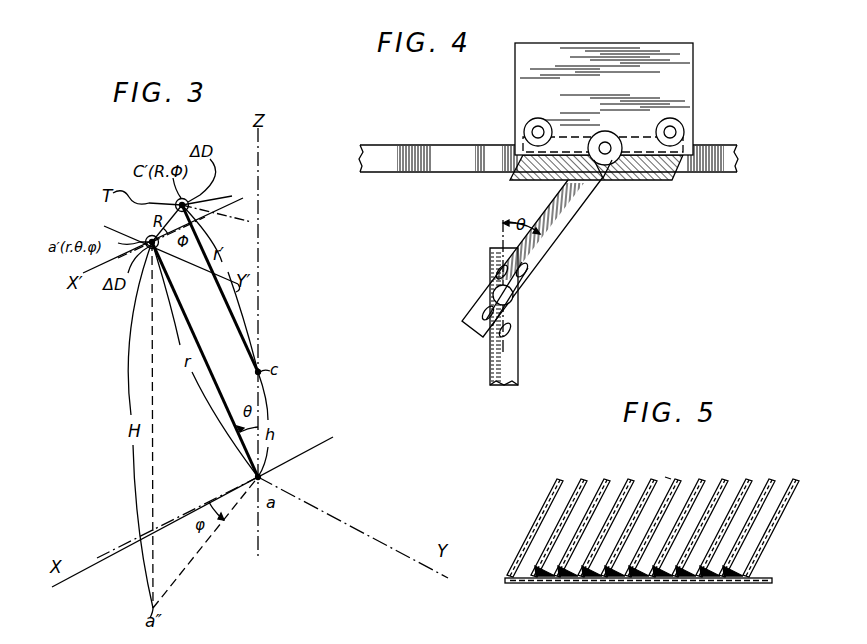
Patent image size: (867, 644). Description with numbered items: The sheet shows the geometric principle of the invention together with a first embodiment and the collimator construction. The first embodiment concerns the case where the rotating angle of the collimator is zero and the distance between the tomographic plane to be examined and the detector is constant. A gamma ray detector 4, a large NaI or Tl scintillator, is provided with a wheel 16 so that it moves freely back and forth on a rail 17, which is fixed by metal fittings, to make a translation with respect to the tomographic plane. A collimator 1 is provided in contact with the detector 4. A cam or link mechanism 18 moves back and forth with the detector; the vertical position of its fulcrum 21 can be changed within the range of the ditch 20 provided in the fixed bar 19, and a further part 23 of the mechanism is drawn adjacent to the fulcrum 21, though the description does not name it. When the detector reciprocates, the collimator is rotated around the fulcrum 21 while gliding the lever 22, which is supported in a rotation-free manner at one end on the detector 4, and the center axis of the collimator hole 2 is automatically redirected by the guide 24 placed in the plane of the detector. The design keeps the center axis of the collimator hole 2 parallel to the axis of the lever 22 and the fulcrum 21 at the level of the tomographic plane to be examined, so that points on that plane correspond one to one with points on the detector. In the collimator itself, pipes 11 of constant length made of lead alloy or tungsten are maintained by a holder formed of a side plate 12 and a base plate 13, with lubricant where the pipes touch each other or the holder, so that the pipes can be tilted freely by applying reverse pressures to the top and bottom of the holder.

In FIG. 4, the collimator 1 is at (668, 182).
In FIG. 4, the gamma ray detector 4 is at (683, 72).
In FIG. 4, the wheel 16 is at (680, 129).
In FIG. 4, the rail 17 is at (730, 149).
In FIG. 4, the cam or link mechanism 18 is at (647, 215).
In FIG. 4, the fixed bar 19 is at (512, 348).
In FIG. 4, the ditch 20 is at (516, 320).
In FIG. 4, the fulcrum 21 is at (513, 293).
In FIG. 4, the lever 22 is at (556, 242).
In FIG. 4, the slot 23 is at (526, 270).
In FIG. 4, the guide 24 is at (608, 178).
In FIG. 5, the collimator hole 2 is at (729, 490).
In FIG. 5, the pipes 11 is at (662, 480).
In FIG. 5, the side plate 12 is at (546, 500).
In FIG. 5, the base plate 13 is at (722, 583).